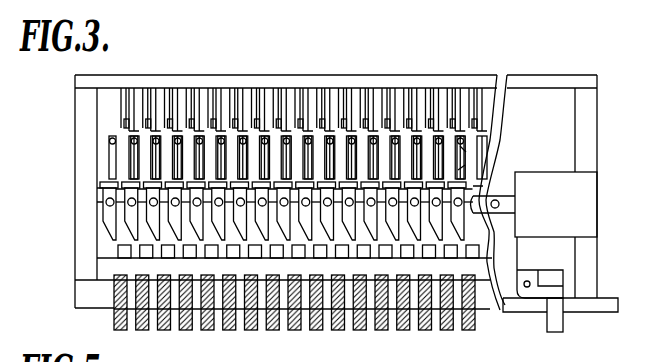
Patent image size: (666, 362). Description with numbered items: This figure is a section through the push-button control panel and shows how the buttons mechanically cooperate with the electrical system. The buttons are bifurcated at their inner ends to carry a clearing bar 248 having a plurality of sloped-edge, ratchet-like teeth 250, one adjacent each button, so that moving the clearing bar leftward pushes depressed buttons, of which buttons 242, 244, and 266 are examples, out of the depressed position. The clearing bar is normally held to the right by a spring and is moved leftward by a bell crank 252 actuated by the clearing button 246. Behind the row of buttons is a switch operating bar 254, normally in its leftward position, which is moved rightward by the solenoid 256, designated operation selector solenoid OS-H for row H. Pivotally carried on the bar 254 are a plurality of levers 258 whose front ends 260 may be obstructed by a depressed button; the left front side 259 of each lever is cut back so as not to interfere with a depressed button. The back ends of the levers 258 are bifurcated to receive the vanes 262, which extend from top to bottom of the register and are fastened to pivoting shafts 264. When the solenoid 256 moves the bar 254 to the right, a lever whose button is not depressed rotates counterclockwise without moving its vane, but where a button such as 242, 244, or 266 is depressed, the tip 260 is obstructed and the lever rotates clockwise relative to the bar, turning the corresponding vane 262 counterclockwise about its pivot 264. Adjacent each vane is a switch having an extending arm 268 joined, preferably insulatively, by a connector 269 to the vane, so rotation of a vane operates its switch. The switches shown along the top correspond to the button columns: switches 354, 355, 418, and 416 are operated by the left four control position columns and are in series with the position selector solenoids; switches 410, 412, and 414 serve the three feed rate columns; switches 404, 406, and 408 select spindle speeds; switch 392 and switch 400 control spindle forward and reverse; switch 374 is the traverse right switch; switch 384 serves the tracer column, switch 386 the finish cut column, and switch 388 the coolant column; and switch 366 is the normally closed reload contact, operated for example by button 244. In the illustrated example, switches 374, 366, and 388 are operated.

The switch 354 is at (116, 0).
The switch 355 is at (138, 0).
The switch 418 is at (159, 0).
The switch 416 is at (180, 0).
The switch 410 is at (202, 0).
The switch 412 is at (223, 0).
The switch 414 is at (245, 0).
The normally open switch 404 is at (266, 0).
The spindle speed switch 406 is at (288, 0).
The spindle speed switch 408 is at (309, 0).
The normally open switch 392 is at (330, 0).
The switch 400 is at (352, 0).
The traverse right switch 374 is at (373, 0).
The switch 384 is at (394, 0).
The Fin. Cut column switch 386 is at (416, 0).
The Coolant column switch 388 is at (437, 0).
The normally closed reload contact 366 is at (459, 0).
The pivoting shaft 264 is at (111, 134).
The vane 262 is at (132, 160).
The lever 258 is at (128, 190).
The switch operating bar 254 is at (100, 207).
The left front side 259 is at (105, 232).
The teeth 250 is at (478, 274).
The depressed button 242 is at (386, 331).
The depressed button 266 is at (449, 331).
The depressed button 244 is at (474, 331).
The clearing button 246 is at (560, 326).
The clearing bar 248 is at (512, 266).
The bell crank 252 is at (543, 283).
The front end 260 is at (487, 262).
The solenoid 256 is at (585, 211).
The extending arm 268 is at (466, 152).
The connector 269 is at (465, 165).